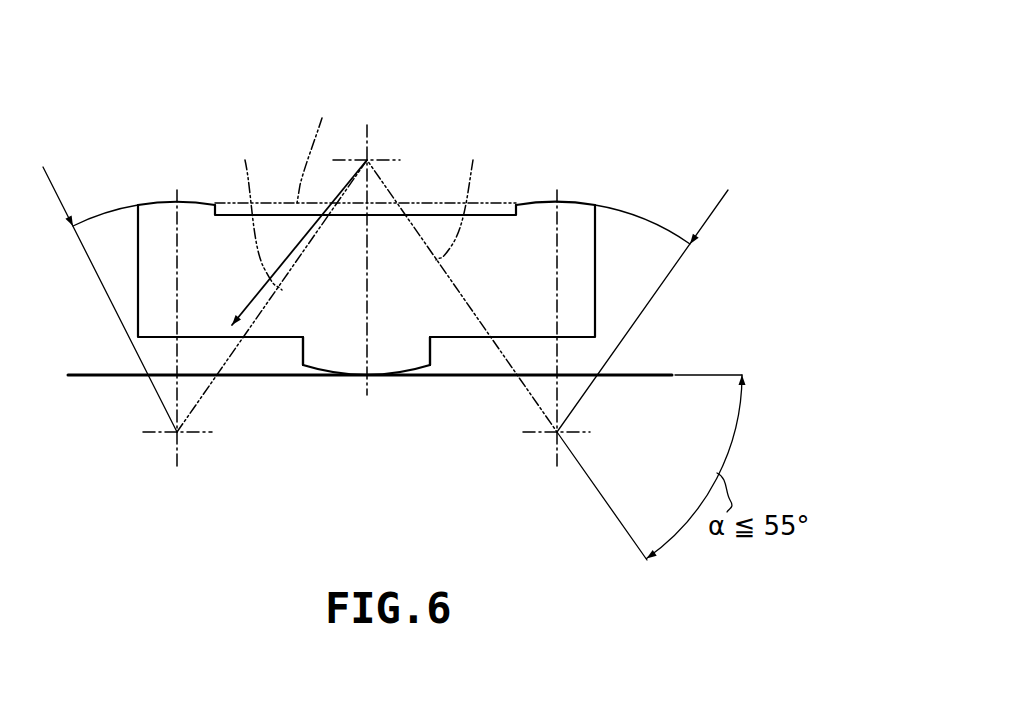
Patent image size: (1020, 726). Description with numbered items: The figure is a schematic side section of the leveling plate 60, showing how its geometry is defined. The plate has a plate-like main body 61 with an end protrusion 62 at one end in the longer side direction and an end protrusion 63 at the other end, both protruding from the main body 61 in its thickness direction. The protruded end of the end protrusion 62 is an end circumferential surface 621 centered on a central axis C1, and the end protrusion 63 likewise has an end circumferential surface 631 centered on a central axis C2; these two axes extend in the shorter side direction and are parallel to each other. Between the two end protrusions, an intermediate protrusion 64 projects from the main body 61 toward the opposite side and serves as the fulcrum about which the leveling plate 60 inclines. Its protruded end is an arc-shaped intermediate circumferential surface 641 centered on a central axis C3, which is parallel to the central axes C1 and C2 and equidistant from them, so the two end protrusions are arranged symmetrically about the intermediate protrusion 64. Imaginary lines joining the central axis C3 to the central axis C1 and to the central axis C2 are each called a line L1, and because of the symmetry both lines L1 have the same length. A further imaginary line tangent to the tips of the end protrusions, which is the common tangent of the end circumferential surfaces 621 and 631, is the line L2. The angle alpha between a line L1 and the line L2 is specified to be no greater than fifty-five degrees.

The leveling plate 60 is at (643, 140).
The main body 61 is at (148, 278).
The end protrusion 62 is at (172, 204).
The end circumferential surface 621 is at (150, 204).
The end protrusion 63 is at (570, 204).
The end circumferential surface 631 is at (596, 203).
The intermediate protrusion 64 is at (402, 359).
The intermediate circumferential surface 641 is at (353, 377).
The central axis C1 is at (177, 432).
The central axis C2 is at (557, 432).
The central axis C3 is at (367, 160).
The line L1 is at (358, 211).
The line L2 is at (315, 147).